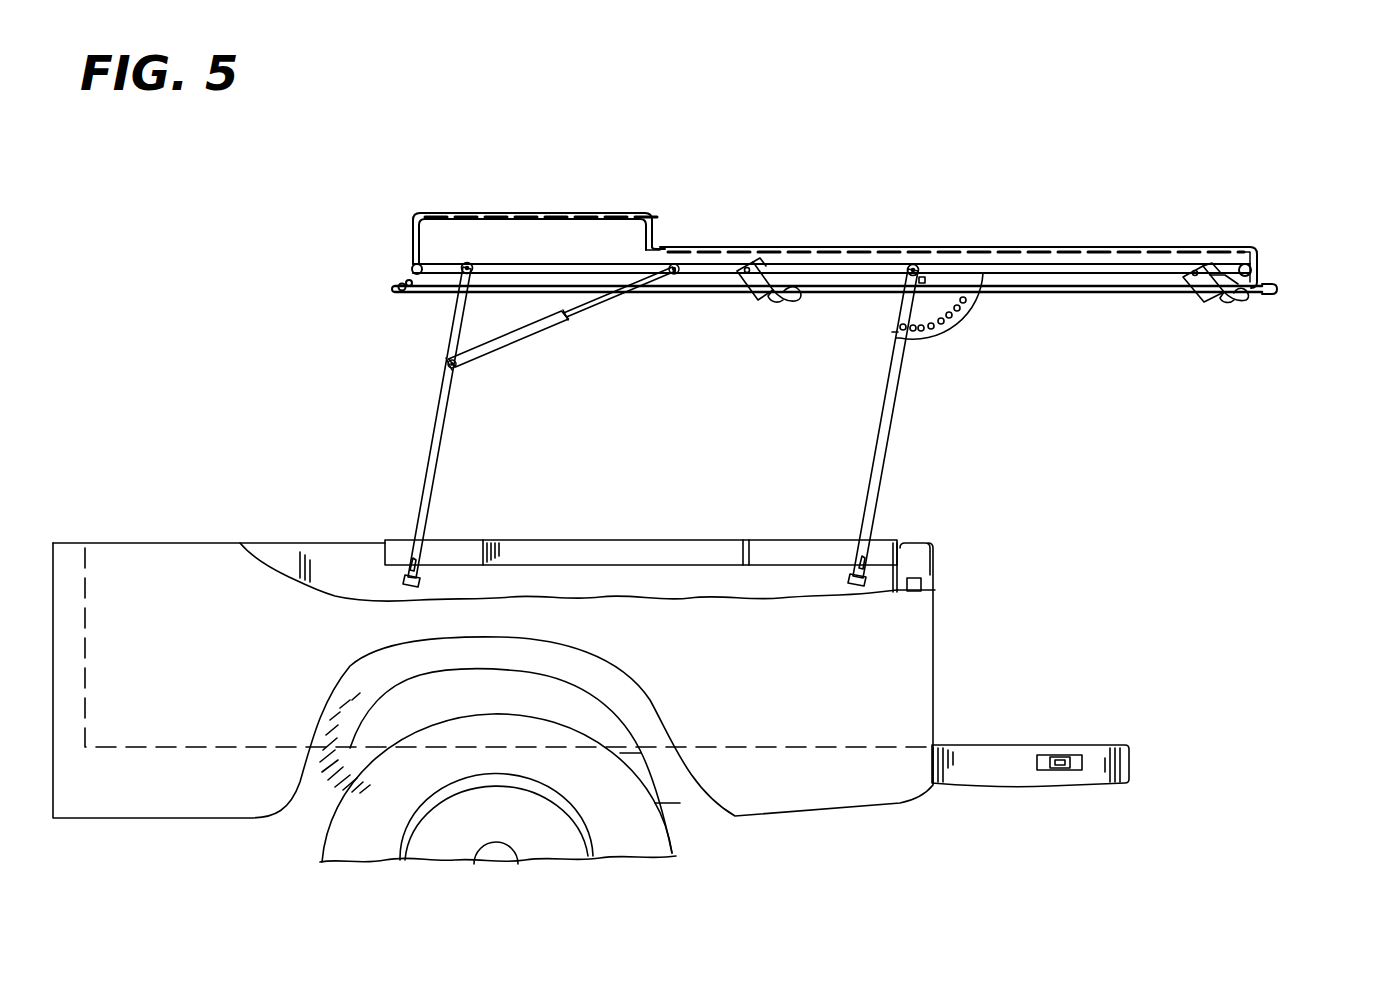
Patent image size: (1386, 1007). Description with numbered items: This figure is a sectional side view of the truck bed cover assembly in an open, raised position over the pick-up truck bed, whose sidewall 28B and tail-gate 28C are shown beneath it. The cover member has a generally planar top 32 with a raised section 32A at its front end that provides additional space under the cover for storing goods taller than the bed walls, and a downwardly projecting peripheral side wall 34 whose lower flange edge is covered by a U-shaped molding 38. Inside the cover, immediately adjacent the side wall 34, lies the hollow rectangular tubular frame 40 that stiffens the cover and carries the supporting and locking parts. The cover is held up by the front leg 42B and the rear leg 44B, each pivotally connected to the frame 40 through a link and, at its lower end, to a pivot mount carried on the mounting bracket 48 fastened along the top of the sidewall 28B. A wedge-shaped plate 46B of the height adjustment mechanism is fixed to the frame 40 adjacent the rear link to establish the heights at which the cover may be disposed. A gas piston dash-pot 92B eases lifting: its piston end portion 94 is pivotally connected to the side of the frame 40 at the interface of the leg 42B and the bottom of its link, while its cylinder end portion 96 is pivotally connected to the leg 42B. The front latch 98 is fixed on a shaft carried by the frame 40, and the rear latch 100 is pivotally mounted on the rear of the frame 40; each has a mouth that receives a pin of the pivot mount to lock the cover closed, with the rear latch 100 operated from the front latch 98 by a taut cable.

The raised section 32A is at (555, 213).
The frame 40 is at (612, 264).
The top 32 is at (847, 248).
The peripheral side wall 34 is at (1257, 252).
The U-shaped molding 38 is at (1278, 289).
The piston end portion 94 is at (675, 275).
The gas piston dash-pot 92B is at (525, 337).
The leg 42B is at (442, 427).
The cylinder end portion 96 is at (455, 368).
The front latch 98 is at (783, 297).
The leg 44B is at (885, 478).
The wedge-shaped plate 46B is at (968, 296).
The rear latch 100 is at (1242, 304).
The mounting bracket 48 is at (680, 545).
The sidewall 28B is at (320, 545).
The tail-gate 28C is at (1008, 758).